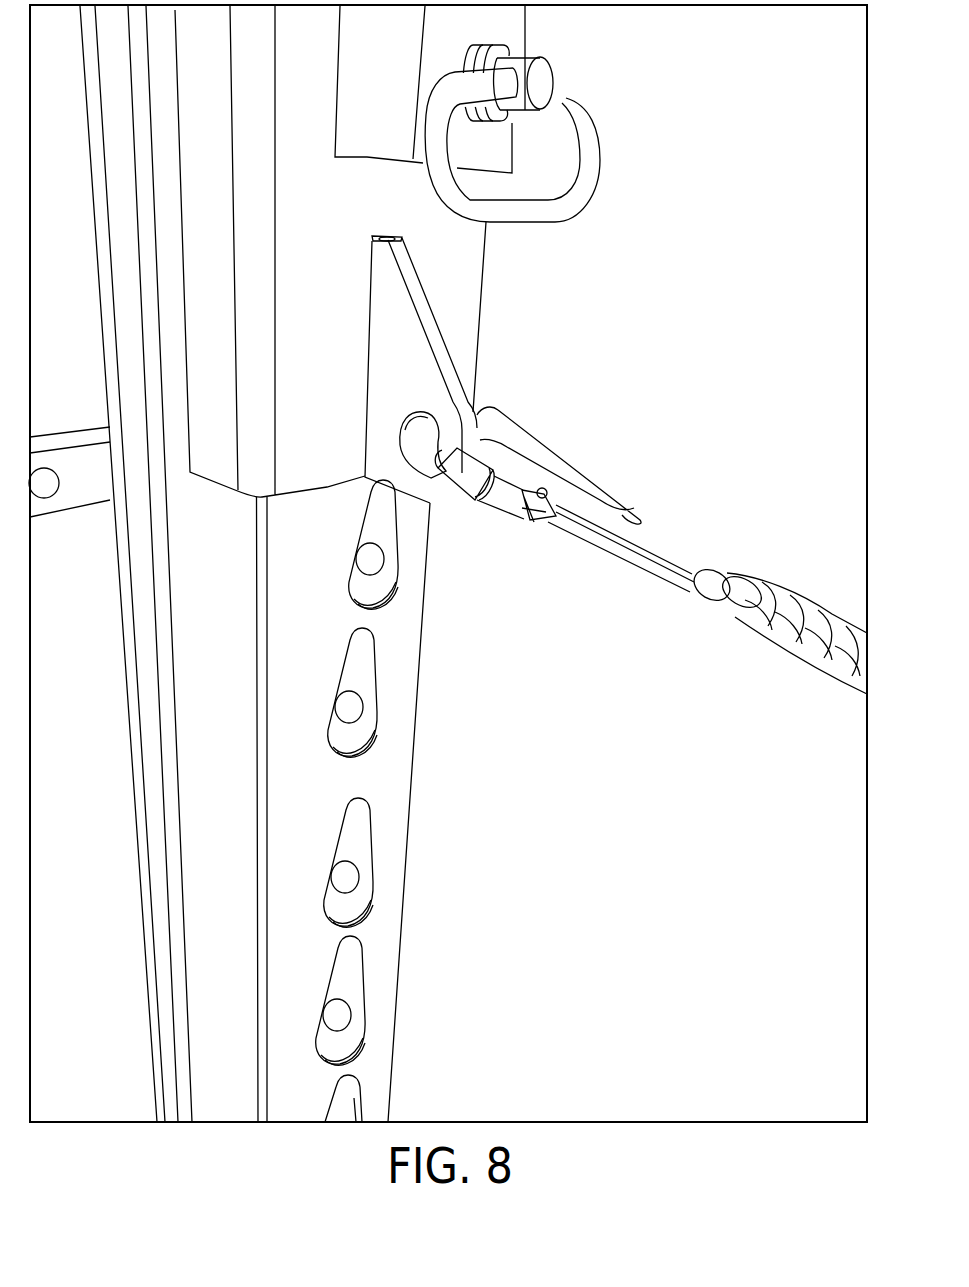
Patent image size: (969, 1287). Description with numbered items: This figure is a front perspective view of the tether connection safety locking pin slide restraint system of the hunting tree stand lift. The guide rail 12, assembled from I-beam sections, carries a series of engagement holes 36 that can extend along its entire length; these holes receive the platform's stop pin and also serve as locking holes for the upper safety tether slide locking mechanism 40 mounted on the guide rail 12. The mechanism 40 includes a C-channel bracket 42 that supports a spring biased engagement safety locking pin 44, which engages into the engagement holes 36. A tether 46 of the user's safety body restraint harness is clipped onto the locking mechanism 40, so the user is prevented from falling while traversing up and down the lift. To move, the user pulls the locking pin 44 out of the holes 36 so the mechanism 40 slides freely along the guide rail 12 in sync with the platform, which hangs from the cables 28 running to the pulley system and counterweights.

The guide rail 12 is at (397, 830).
The cables 28 is at (172, 830).
The engagement holes 36 is at (373, 558).
The safety tether slide locking mechanism 40 is at (477, 293).
The C-channel bracket 42 is at (465, 257).
The spring biased engagement safety locking pin 44 is at (542, 85).
The tether 46 is at (765, 628).